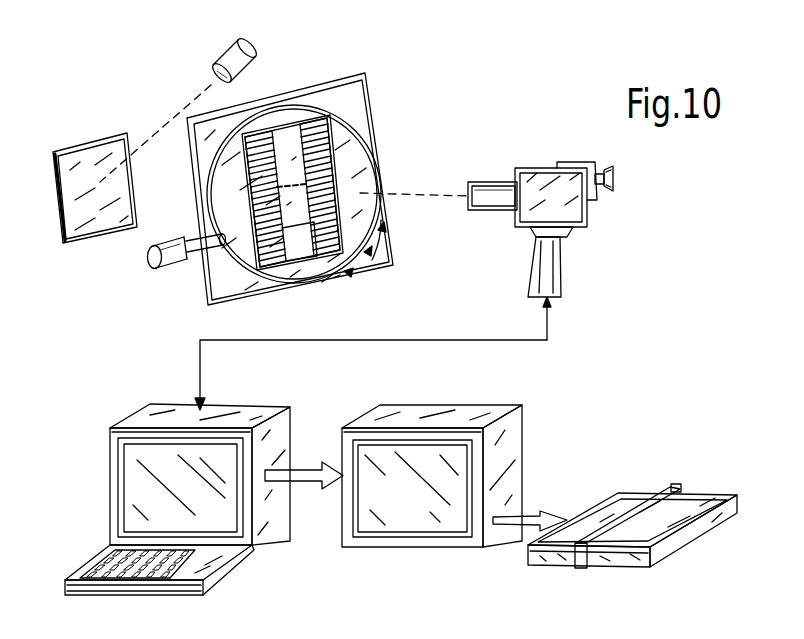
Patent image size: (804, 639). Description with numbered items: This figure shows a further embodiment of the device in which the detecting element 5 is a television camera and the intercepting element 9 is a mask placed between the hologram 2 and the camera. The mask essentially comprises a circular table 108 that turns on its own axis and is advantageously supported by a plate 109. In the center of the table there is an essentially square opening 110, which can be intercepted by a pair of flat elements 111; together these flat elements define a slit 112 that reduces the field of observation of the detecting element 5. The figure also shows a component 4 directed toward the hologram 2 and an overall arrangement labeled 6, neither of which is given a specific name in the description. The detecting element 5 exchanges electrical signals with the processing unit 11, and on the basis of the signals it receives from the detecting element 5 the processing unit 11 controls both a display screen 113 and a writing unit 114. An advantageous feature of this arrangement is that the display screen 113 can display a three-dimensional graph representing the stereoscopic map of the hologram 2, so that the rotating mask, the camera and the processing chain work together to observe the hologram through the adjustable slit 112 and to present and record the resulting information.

The hologram 2 is at (82, 167).
The light source 4 is at (212, 62).
The detecting element 5 is at (541, 185).
The evaluation unit 6 is at (561, 398).
The intercepting element 9 is at (380, 262).
The processing unit 11 is at (150, 413).
The circular table 108 is at (298, 117).
The plate 109 is at (365, 118).
The square opening 110 is at (278, 120).
The flat elements 111 is at (277, 250).
The slit 112 is at (298, 240).
The display screen 113 is at (442, 517).
The writing unit 114 is at (547, 560).